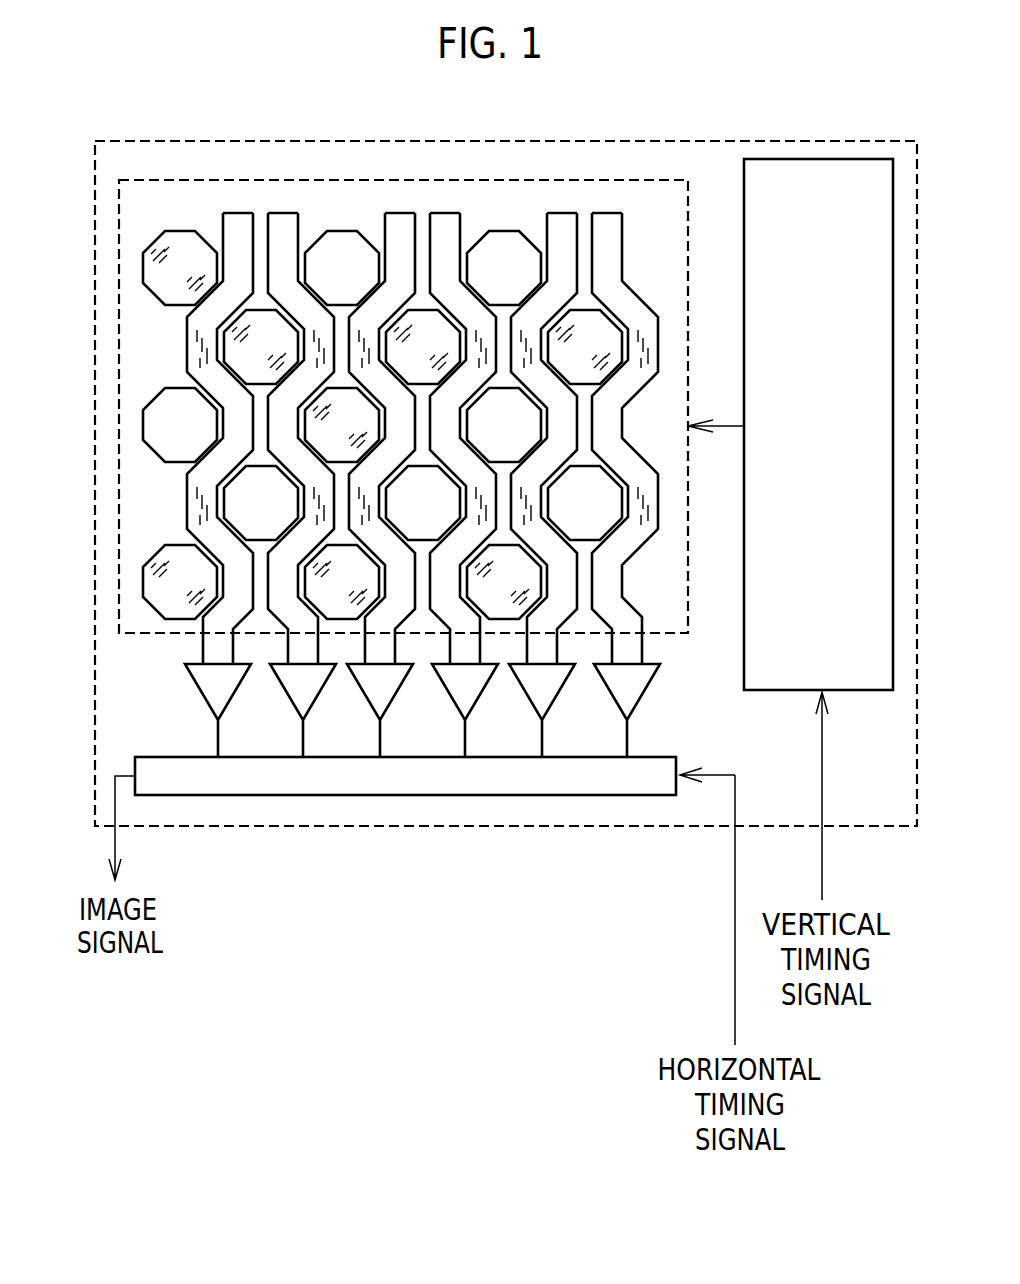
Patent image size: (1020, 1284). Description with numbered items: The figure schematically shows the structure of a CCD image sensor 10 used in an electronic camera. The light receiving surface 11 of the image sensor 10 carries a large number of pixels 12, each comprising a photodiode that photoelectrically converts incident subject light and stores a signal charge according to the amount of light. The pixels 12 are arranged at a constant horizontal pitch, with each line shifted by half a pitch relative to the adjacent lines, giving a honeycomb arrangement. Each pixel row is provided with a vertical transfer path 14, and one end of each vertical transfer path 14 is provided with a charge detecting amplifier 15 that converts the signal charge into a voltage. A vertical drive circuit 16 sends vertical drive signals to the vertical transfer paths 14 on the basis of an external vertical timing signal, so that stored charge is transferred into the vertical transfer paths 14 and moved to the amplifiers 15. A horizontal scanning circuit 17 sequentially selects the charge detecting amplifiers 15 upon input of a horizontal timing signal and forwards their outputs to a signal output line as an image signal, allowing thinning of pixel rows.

The CCD image sensor 10 is at (566, 140).
The light receiving surface 11 is at (520, 180).
The pixel 12 is at (153, 400).
The vertical transfer path 14 is at (282, 213).
The charge detecting amplifier 15 is at (677, 708).
The vertical drive circuit 16 is at (835, 159).
The horizontal scanning circuit 17 is at (600, 795).